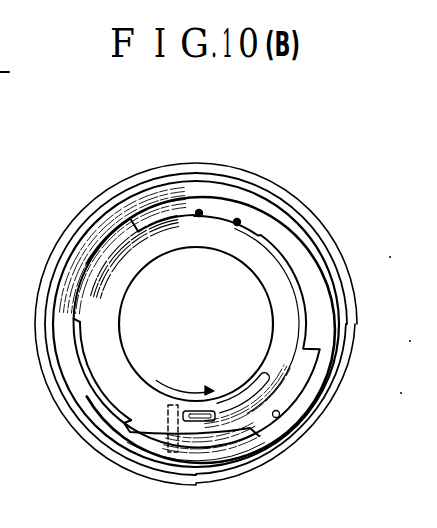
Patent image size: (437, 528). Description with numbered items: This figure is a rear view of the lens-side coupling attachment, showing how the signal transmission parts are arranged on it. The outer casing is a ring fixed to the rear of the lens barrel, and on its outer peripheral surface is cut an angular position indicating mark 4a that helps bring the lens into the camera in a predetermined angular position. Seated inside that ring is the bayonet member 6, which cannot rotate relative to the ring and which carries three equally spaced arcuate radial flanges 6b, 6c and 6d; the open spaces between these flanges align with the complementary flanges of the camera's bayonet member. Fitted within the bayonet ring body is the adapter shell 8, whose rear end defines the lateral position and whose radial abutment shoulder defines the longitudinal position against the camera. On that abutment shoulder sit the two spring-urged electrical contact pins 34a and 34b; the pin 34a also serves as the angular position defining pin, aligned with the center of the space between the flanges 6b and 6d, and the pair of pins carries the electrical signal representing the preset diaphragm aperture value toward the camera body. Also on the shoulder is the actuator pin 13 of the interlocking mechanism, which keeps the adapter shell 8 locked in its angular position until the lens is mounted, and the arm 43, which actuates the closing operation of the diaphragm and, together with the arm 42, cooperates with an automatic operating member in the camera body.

The angular position indicating mark 4a is at (196, 162).
The bayonet member 6 is at (150, 212).
The arcuate radial flange 6b is at (296, 268).
The arcuate radial flange 6c is at (238, 440).
The arcuate radial flange 6d is at (88, 272).
The adapter shell 8 is at (290, 292).
The actuator pin 13 is at (279, 416).
The electrical contact pin 34a is at (199, 213).
The electrical contact pin 34b is at (237, 222).
The arm 42 is at (170, 452).
The arm for actuation of the closing operation of the diaphragm 43 is at (201, 421).